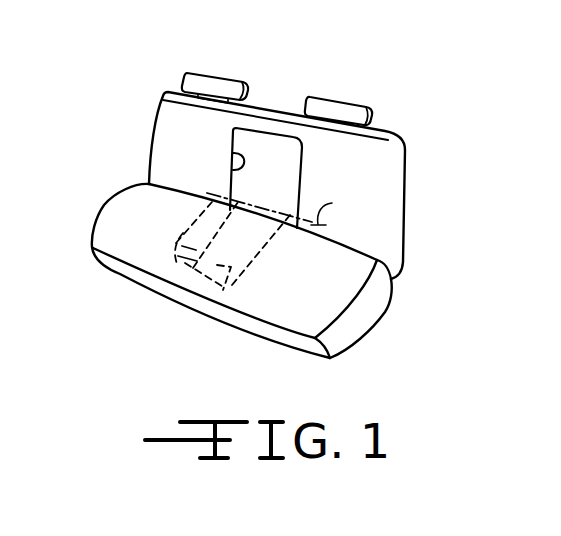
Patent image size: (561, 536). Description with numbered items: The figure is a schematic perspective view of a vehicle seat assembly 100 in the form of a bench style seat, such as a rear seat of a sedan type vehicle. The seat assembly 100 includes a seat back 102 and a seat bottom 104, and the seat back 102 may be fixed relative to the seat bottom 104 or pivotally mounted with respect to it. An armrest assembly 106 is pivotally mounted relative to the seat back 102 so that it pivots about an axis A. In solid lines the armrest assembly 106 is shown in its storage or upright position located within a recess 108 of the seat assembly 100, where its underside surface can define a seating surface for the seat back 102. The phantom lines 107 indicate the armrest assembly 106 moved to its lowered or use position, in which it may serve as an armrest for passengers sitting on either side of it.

The vehicle seat assembly 100 is at (319, 231).
The seat back 102 is at (408, 185).
The seat bottom 104 is at (362, 311).
The armrest assembly 106 is at (282, 168).
The phantom lines 107 is at (237, 278).
The recess 108 is at (233, 166).